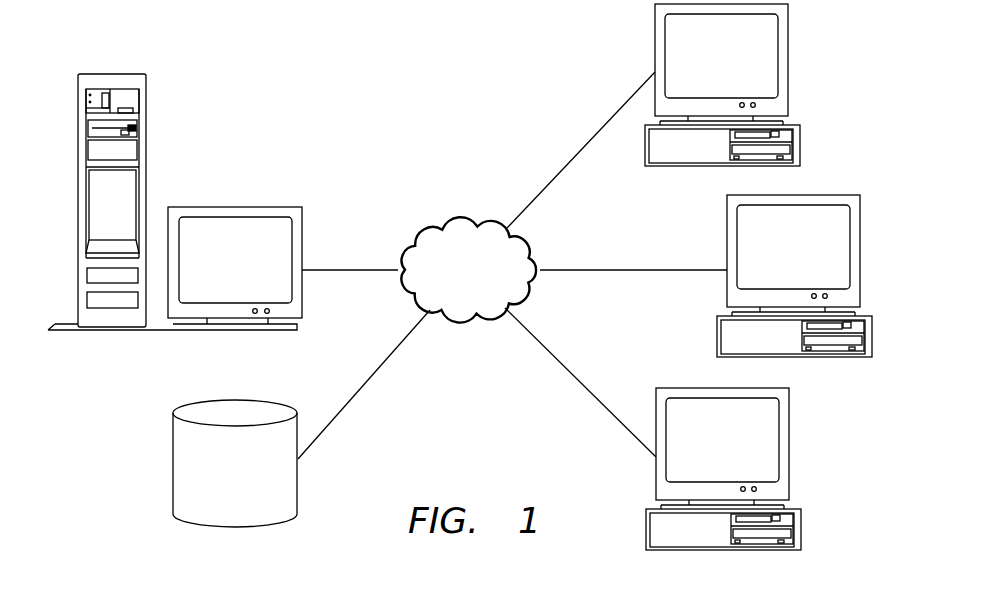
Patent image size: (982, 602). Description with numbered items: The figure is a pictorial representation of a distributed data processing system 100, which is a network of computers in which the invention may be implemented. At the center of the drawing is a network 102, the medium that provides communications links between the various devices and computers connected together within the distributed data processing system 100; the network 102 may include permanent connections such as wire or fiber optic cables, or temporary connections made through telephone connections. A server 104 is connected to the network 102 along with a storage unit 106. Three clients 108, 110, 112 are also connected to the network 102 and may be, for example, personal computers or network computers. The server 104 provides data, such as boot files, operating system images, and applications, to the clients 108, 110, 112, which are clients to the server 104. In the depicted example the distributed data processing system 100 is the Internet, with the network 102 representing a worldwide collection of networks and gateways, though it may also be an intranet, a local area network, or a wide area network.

The distributed data processing system 100 is at (297, 66).
The network 102 is at (449, 296).
The server 104 is at (218, 270).
The storage unit 106 is at (216, 504).
The client 108 is at (703, 71).
The client 110 is at (776, 261).
The client 112 is at (704, 454).